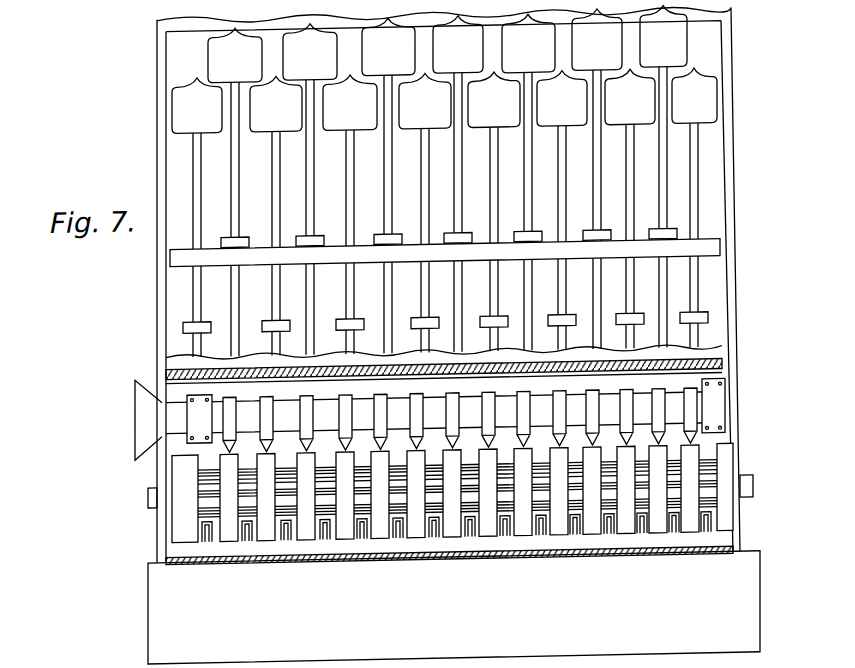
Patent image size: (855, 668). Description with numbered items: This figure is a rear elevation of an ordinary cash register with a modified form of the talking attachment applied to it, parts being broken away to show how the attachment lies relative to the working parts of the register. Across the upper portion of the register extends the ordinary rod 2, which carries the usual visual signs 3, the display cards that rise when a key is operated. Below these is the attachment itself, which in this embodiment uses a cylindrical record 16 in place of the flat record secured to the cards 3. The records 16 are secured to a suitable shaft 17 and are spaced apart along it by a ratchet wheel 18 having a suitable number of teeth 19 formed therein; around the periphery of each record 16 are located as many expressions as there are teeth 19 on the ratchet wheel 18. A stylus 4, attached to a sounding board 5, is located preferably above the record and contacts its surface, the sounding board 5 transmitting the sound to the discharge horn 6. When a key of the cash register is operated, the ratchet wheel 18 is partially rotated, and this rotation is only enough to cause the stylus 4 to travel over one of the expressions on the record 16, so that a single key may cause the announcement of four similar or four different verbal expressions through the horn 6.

The rod 2 is at (608, 200).
The visual sign 3 is at (648, 61).
The stylus 4 is at (725, 445).
The sounding board 5 is at (727, 415).
The discharge horn 6 is at (142, 428).
The cylindrical record 16 is at (680, 552).
The shaft 17 is at (748, 512).
The ratchet wheel 18 is at (708, 489).
The teeth 19 is at (580, 552).